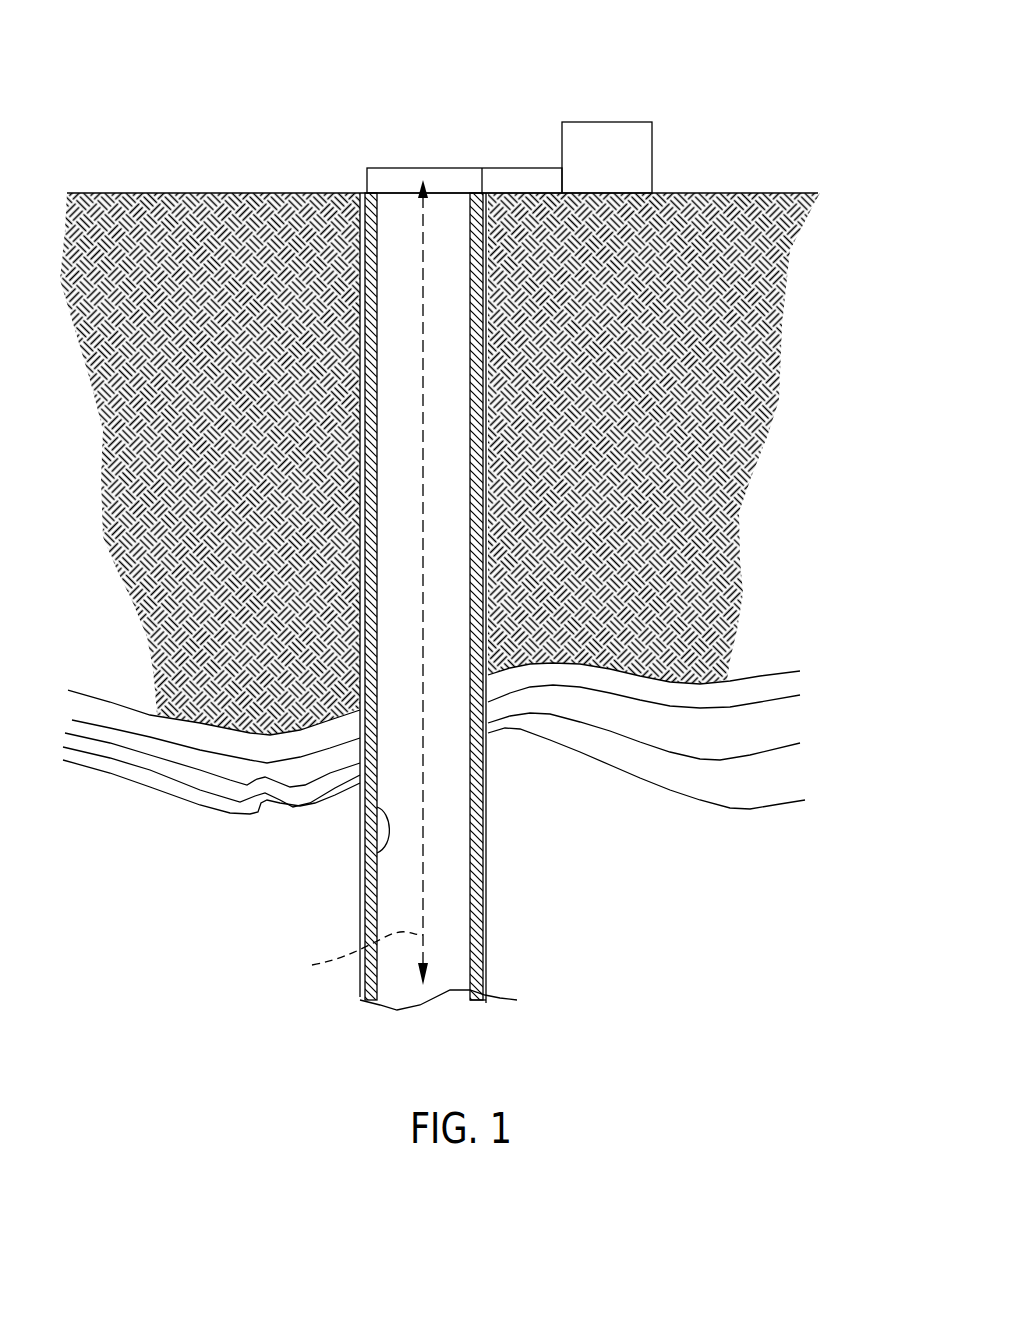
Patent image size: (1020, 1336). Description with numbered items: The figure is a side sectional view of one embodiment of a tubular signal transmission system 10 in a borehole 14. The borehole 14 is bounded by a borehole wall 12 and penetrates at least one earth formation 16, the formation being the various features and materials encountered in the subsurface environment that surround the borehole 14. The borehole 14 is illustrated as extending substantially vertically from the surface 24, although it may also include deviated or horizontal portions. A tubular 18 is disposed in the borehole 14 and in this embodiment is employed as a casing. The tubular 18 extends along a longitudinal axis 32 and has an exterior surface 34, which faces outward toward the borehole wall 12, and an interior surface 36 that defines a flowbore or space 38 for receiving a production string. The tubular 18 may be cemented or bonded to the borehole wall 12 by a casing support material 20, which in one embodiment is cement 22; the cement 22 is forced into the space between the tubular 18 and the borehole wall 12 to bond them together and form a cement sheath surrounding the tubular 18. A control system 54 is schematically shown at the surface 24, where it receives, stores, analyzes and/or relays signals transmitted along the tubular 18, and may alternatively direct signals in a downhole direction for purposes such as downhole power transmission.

The tubular signal transmission system 10 is at (219, 119).
The borehole wall 12 is at (360, 870).
The borehole 14 is at (360, 193).
The earth formation 16 is at (557, 703).
The tubular 18 is at (477, 995).
The casing support material 20 is at (517, 1000).
The cement 22 is at (487, 950).
The surface 24 is at (775, 193).
The longitudinal axis 32 is at (353, 958).
The exterior surface 34 is at (483, 905).
The interior surface 36 is at (377, 852).
The flowbore 38 is at (417, 651).
The control system 54 is at (605, 122).